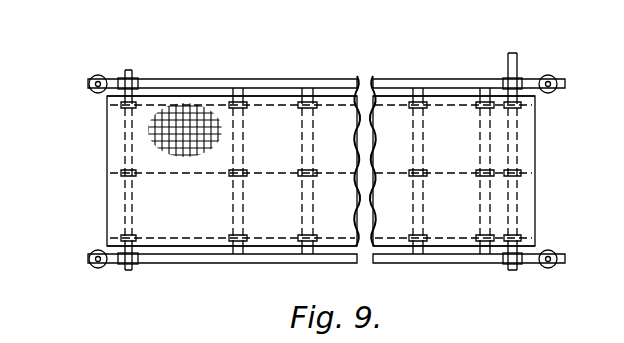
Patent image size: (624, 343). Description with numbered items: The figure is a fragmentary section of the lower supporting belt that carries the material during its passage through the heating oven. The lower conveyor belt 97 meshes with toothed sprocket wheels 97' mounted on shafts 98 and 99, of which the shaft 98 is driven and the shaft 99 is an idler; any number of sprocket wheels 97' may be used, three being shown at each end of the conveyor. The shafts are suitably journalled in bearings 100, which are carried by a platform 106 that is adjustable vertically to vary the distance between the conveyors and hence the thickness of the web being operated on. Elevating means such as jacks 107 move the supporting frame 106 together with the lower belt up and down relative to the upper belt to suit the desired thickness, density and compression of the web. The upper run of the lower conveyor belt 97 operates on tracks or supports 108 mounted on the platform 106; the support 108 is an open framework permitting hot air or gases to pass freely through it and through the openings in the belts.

The lower conveyor belt 97 is at (298, 171).
The sprocket wheels 97' is at (325, 171).
The shaft 98 is at (508, 62).
The shaft 99 is at (130, 70).
The bearings 100 is at (140, 80).
The platform 106 is at (368, 62).
The jacks 107 is at (98, 75).
The tracks 108 is at (287, 142).